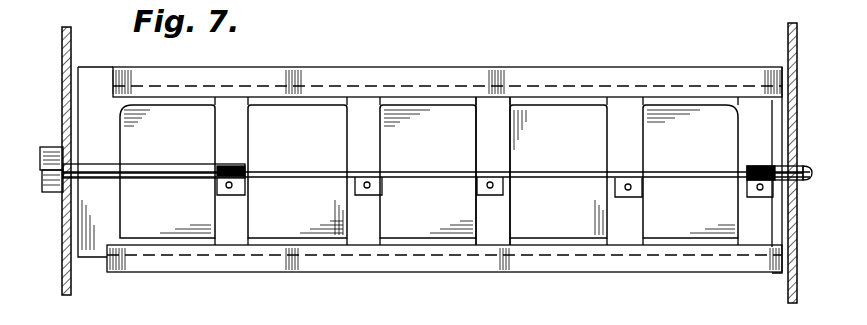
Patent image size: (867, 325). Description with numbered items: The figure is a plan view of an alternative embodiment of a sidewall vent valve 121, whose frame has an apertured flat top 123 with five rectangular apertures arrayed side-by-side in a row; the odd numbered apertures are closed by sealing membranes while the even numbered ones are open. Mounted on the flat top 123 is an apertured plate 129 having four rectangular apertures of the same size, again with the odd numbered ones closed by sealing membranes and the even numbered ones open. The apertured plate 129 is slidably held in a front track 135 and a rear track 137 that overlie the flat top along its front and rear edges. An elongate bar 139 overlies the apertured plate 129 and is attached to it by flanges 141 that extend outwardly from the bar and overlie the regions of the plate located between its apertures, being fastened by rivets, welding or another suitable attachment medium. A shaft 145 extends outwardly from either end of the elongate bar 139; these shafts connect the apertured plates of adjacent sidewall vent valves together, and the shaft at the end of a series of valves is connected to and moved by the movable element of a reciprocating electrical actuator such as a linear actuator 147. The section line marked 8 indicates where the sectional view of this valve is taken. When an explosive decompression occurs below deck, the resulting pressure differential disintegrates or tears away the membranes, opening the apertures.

The flat top 123 is at (91, 84).
The rear track 137 is at (281, 68).
The front track 135 is at (163, 263).
The apertured plate 129 is at (500, 232).
The elongate bar 139 is at (523, 167).
The shaft 145 is at (133, 172).
The linear actuator 147 is at (45, 160).
The flanges 141 is at (365, 197).
The sidewall vent valve 121 is at (403, 289).
The section line 8- 8 is at (46, 203).